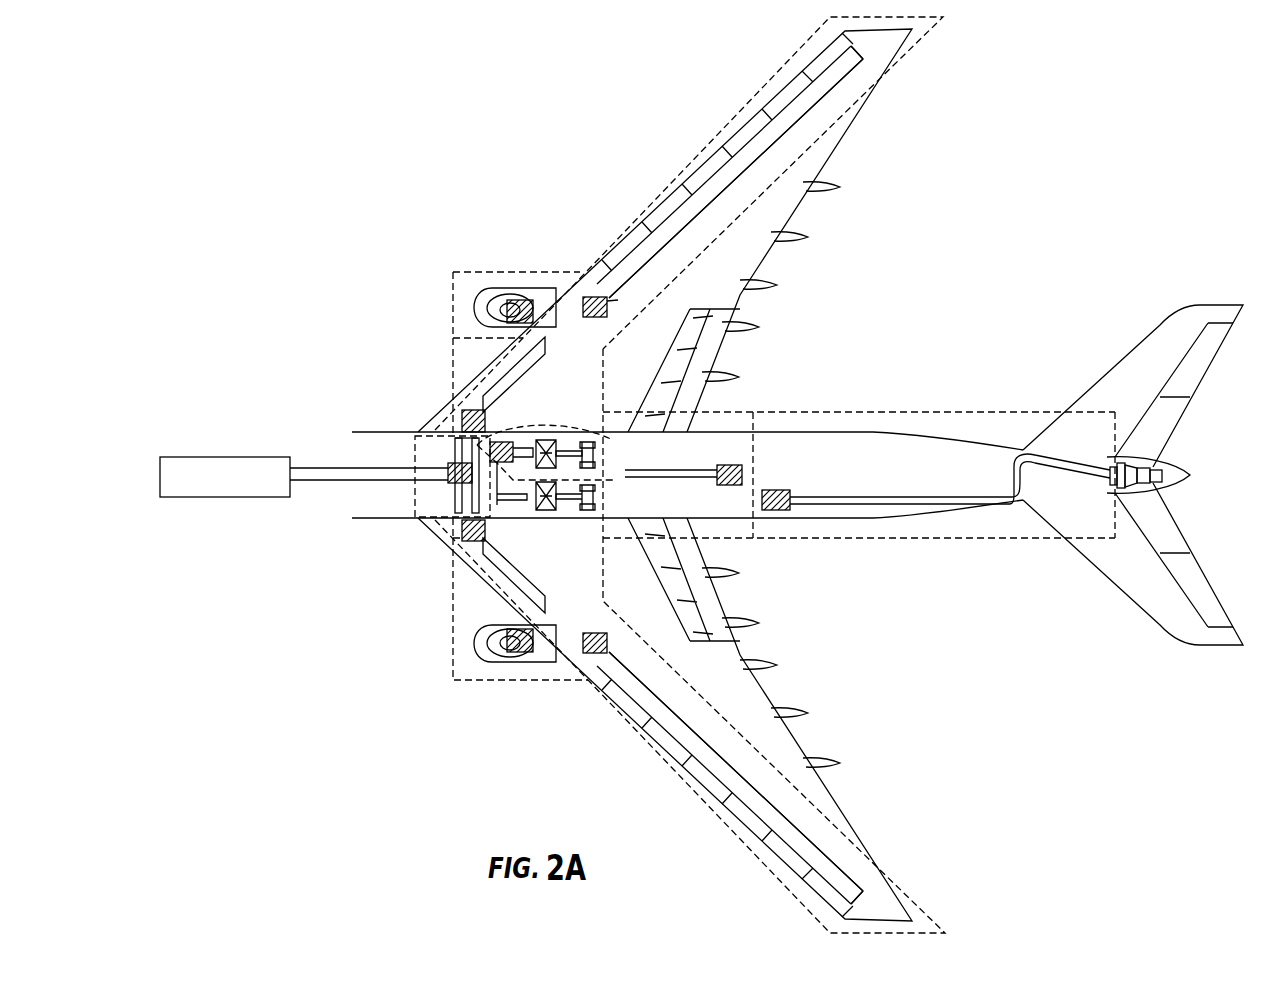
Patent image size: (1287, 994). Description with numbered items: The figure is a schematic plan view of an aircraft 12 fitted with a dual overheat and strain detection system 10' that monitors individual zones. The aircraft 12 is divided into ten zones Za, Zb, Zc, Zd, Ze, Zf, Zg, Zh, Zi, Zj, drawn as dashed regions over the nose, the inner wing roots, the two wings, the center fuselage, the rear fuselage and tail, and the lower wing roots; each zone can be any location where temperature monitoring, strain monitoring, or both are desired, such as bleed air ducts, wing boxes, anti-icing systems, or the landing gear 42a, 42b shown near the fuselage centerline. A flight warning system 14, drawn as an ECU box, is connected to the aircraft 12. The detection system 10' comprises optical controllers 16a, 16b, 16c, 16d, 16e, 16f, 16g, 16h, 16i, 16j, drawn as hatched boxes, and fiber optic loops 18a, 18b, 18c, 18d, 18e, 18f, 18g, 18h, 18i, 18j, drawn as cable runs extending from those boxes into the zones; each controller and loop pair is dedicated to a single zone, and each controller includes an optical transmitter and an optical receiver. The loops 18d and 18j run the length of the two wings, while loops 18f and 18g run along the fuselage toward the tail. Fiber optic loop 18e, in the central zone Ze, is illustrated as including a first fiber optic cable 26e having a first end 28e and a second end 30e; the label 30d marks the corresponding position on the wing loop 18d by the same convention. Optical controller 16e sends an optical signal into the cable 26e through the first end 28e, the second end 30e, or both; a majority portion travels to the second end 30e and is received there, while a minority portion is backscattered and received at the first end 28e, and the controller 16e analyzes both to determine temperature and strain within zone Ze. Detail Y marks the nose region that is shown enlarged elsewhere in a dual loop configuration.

The dual overheat and strain detection system 10' is at (252, 178).
The aircraft 12 is at (780, 675).
The flight warning system 14 is at (236, 457).
The optical controller 16a is at (446, 470).
The optical controller 16b is at (463, 410).
The optical controller 16c is at (520, 300).
The optical controller 16d is at (588, 297).
The optical controller 16e is at (518, 512).
The optical controller 16f is at (740, 468).
The optical controller 16g is at (773, 490).
The optical controller 16h is at (466, 542).
The optical controller 16i is at (517, 652).
The optical controller 16j is at (592, 654).
The fiber optic loop 18a is at (452, 520).
The fiber optic loop 18b is at (467, 384).
The fiber optic loop 18c is at (475, 302).
The fiber optic loop 18d is at (800, 117).
The fiber optic loop 18e is at (567, 446).
The fiber optic loop 18f is at (690, 480).
The fiber optic loop 18g is at (860, 493).
The fiber optic loop 18h is at (537, 580).
The fiber optic loop 18i is at (497, 657).
The fiber optic loop 18j is at (797, 830).
The first fiber optic cable 26e is at (538, 438).
The first end 28e is at (530, 500).
The connector 30d is at (602, 297).
The second end 30e is at (540, 416).
The landing gear 42a is at (607, 447).
The landing gear 42b is at (608, 512).
The detail Y is at (413, 425).
The zone Za is at (413, 497).
The zone Zb is at (428, 430).
The zone Zc is at (453, 273).
The zone Zd is at (735, 125).
The zone Ze is at (540, 422).
The zone Zf is at (738, 412).
The zone Zg is at (940, 412).
The zone Zh is at (445, 532).
The zone Zi is at (453, 680).
The zone Zj is at (723, 818).